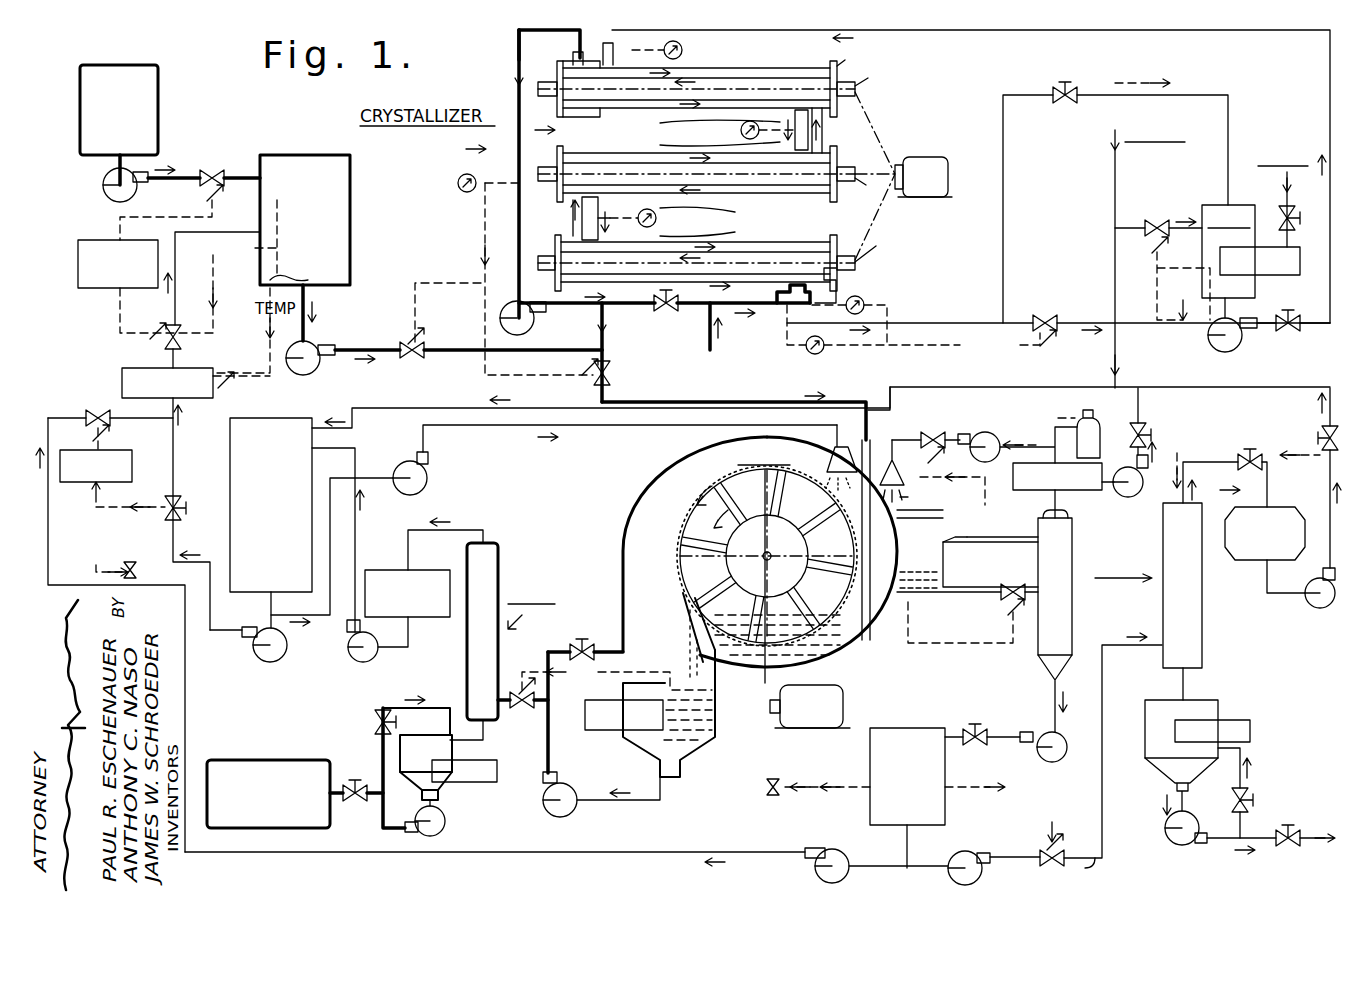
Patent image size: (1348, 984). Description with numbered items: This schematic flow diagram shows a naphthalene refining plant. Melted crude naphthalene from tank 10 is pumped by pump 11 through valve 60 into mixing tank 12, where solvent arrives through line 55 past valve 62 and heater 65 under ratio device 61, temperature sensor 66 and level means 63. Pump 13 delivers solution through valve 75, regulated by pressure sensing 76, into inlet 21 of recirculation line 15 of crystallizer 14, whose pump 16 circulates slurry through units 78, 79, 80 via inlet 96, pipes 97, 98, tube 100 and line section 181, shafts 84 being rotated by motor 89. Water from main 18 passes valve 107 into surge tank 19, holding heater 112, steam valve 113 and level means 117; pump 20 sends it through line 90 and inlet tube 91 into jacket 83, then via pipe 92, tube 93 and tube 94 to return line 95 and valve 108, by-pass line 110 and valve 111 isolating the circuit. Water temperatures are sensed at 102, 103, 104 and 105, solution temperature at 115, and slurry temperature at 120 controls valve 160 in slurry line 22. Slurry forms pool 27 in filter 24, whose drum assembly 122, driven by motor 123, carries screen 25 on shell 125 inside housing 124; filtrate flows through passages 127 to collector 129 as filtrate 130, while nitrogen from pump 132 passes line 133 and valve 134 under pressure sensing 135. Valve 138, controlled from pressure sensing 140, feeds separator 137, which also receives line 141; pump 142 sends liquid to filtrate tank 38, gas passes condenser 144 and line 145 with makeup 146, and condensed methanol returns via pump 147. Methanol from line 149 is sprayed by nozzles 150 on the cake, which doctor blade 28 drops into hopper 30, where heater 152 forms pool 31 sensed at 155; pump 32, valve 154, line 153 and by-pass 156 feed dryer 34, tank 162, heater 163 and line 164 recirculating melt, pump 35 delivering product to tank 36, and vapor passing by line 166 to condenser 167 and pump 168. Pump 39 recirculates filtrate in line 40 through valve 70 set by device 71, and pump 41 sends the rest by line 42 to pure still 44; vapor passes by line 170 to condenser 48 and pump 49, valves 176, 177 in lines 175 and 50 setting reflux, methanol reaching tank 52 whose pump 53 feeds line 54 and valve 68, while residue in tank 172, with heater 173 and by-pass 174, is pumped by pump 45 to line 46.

The tank 10 is at (158, 95).
The pump 11 is at (103, 184).
The mixing tank 12 is at (350, 182).
The pump 13 is at (310, 368).
The scraped-shell crystallizer 14 is at (662, 190).
The recirculation line 15 is at (760, 318).
The pump 16 is at (535, 322).
The main 18 is at (1112, 192).
The surge tank 19 is at (1240, 205).
The pump 20 is at (1238, 340).
The inlet 21 is at (706, 311).
The line 22 is at (842, 404).
The filter 24 is at (625, 492).
The cylindrical filter screen 25 is at (700, 556).
The pool of slurry 27 is at (835, 658).
The doctor blade 28 is at (683, 597).
The hopper 30 is at (715, 729).
The pool of melted naphthalene 31 is at (685, 740).
The pump 32 is at (550, 815).
The dryer 34 is at (498, 645).
The pump 35 is at (445, 825).
The product tank 36 is at (240, 760).
The filtrate tank 38 is at (898, 728).
The pump 39 is at (812, 870).
The line 40 is at (580, 852).
The pump 41 is at (968, 883).
The line 42 is at (1104, 808).
The pure still 44 is at (1198, 633).
The pump 45 is at (1172, 840).
The line 46 is at (1305, 835).
The condenser 48 is at (1255, 560).
The pump 49 is at (1320, 603).
The line 50 is at (1200, 388).
The storage tank 52 is at (282, 418).
The outlet pump 53 is at (262, 662).
The line 54 is at (170, 556).
The line 55 is at (178, 262).
The valve 60 is at (214, 172).
The ratio control device 61 is at (82, 288).
The control valve 62 is at (162, 340).
The level sensor 63 is at (277, 270).
The heater 65 is at (185, 370).
The temperature sensing means 66 is at (312, 285).
The control valve 68 is at (176, 500).
The valve 70 is at (104, 410).
The adjustable control device 71 is at (128, 460).
The valve 75 is at (414, 360).
The pressure-sensing means 76 is at (470, 362).
The crystallizer unit 78 is at (851, 54).
The crystallizer unit 79 is at (837, 152).
The crystallizer unit 80 is at (837, 240).
The jacket 83 is at (790, 52).
The shaft 84 is at (878, 162).
The motor 89 is at (915, 157).
The line 90 is at (920, 32).
The inlet tube 91 is at (607, 45).
The pipe 92 is at (672, 125).
The tube 93 is at (700, 232).
The tube 94 is at (785, 308).
The line 95 is at (888, 324).
The inlet 96 is at (840, 287).
The pipe 97 is at (572, 218).
The pipe 98 is at (822, 128).
The tube 100 is at (577, 55).
The temperature sensing 102 is at (700, 42).
The temperature sensing 103 is at (721, 133).
The temperature sensing 104 is at (688, 216).
The temperature sensing 105 is at (830, 350).
The valve 107 is at (1157, 222).
The valve 108 is at (1048, 318).
The by-pass line 110 is at (1228, 95).
The valve 111 is at (1068, 88).
The heater 112 is at (1278, 275).
The valve 113 is at (1292, 210).
The temperature sensing 115 is at (888, 306).
The level responsive means 117 is at (1195, 310).
The temperature sensing 120 is at (458, 186).
The drum assembly 122 is at (698, 540).
The motor 123 is at (800, 712).
The housing 124 is at (686, 466).
The supporting cylindrical shell 125 is at (698, 518).
The passages 127 is at (785, 555).
The collecting vessel or conduit 129 is at (925, 512).
The filtrate 130 is at (925, 598).
The pump 132 is at (985, 433).
The line 133 is at (896, 440).
The valve 134 is at (934, 433).
The pressure sensing 135 is at (942, 481).
The liquid-gas separator 137 is at (1072, 620).
The valve 138 is at (1005, 597).
The pressure sensing 140 is at (890, 598).
The upper line 141 is at (1023, 522).
The pump 142 is at (1035, 730).
The condenser 144 is at (1075, 490).
The line 145 is at (1020, 440).
The makeup nitrogen supply 146 is at (1095, 425).
The pump 147 is at (1130, 496).
The line 149 is at (482, 430).
The spray nozzles 150 is at (835, 440).
The heater 152 is at (607, 730).
The line 153 is at (545, 750).
The valve 154 is at (518, 708).
The level sensing means 155 is at (640, 684).
The by-pass line 156 is at (590, 650).
The valve 160 is at (610, 373).
The tank 162 is at (443, 735).
The heater 163 is at (483, 783).
The line 164 is at (393, 708).
The line 166 is at (470, 530).
The condenser 167 is at (392, 570).
The pump 168 is at (355, 660).
The line 170 is at (1268, 481).
The lower tank 172 is at (1205, 710).
The heater 173 is at (1250, 720).
The by-pass line 174 is at (1250, 792).
The by-pass line 175 is at (1193, 457).
The valve 176 is at (1250, 455).
The valve 177 is at (1324, 440).
The crystallizer inlet line 181 is at (517, 35).